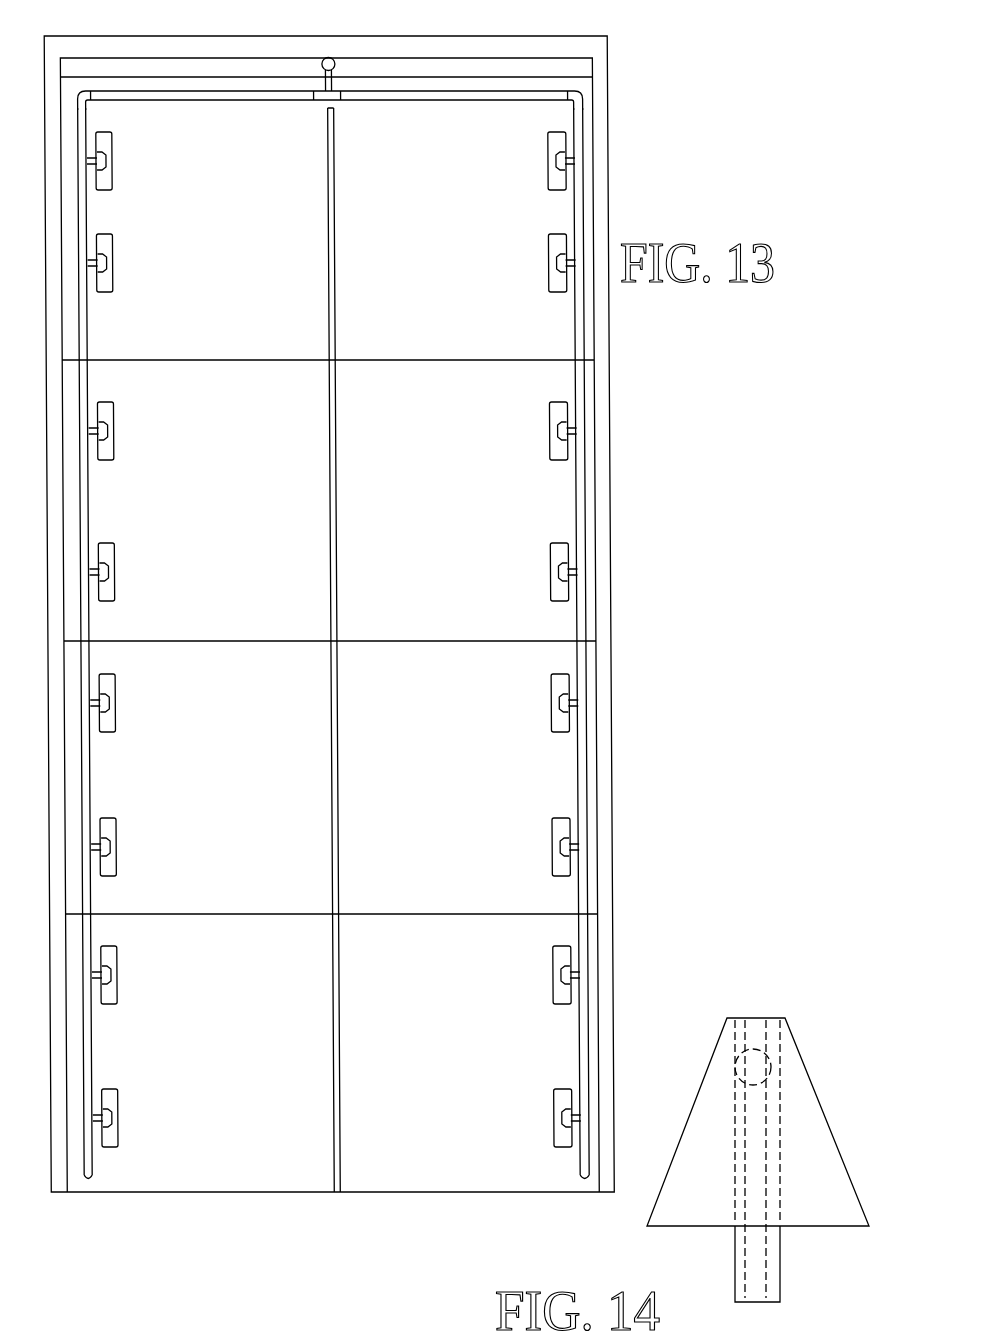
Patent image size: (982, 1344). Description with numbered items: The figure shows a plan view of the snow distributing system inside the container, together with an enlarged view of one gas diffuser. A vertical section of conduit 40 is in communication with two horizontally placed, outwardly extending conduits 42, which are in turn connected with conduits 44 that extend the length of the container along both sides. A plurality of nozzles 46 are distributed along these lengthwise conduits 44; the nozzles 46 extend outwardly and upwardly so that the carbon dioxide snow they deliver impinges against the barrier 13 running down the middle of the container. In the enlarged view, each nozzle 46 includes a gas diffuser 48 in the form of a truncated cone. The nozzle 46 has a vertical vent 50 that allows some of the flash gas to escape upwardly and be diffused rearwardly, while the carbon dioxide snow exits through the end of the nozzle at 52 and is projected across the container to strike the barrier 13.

In FIG. 13, the barrier 13 is at (335, 234).
In FIG. 13, the vertical section of conduit 40 is at (333, 58).
In FIG. 13, the horizontally placed outwardly extending conduits 42 is at (220, 101).
In FIG. 13, the conduits extending the length of the container 44 is at (87, 337).
In FIG. 13, the nozzles 46 is at (104, 163).
In FIG. 14, the nozzles 46 is at (735, 1262).
In FIG. 14, the gas diffuser 48 is at (698, 1086).
In FIG. 14, the vertical vent 50 is at (770, 1066).
In FIG. 14, the end of the nozzle 52 is at (741, 1017).